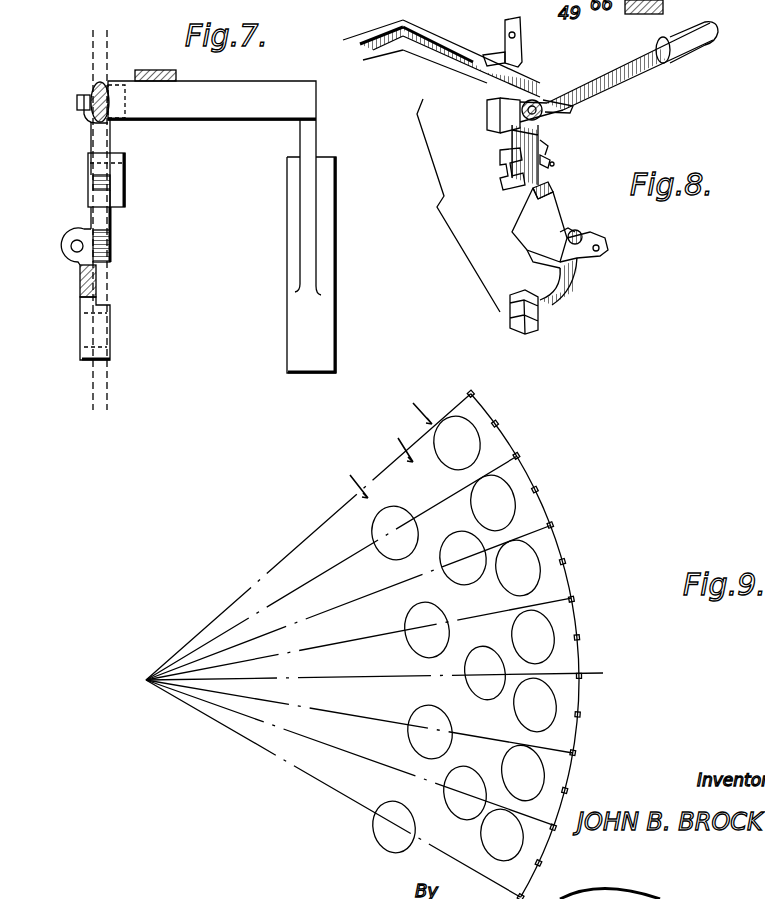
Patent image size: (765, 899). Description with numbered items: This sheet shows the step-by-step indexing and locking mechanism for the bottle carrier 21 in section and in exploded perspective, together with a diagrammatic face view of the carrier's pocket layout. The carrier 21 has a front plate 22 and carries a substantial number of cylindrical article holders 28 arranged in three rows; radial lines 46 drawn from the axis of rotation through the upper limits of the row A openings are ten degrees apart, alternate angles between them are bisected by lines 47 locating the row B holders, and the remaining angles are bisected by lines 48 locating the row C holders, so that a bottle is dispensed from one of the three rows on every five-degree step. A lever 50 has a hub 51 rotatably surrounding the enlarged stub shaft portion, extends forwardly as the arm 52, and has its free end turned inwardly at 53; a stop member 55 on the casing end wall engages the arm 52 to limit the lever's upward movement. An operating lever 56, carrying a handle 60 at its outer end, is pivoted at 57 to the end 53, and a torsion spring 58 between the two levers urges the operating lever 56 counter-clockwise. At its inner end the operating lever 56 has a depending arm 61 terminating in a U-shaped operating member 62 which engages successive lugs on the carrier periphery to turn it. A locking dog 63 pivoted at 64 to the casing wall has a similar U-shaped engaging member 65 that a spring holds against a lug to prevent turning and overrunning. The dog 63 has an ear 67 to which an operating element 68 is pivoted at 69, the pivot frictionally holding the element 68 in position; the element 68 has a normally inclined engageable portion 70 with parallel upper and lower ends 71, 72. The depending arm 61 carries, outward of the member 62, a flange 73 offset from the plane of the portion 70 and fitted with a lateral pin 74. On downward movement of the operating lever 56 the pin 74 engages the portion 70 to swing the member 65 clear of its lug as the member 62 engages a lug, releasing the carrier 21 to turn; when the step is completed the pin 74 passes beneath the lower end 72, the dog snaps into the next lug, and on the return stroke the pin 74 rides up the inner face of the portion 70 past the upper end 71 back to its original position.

In FIG. 7, the carrier 21 is at (119, 404).
In FIG. 9, the carrier 21 is at (580, 660).
In FIG. 7, the front plate 22 is at (92, 392).
In FIG. 9, the article holders 28 is at (466, 432).
In FIG. 9, the radial lines 46 is at (469, 393).
In FIG. 9, the bisecting lines 47 is at (466, 522).
In FIG. 9, the bisecting lines 48 is at (395, 497).
In FIG. 7, the lever 50 is at (307, 222).
In FIG. 8, the lever 50 is at (380, 40).
In FIG. 7, the hub 51 is at (339, 318).
In FIG. 7, the forwardly extending portion of lever 52 is at (262, 85).
In FIG. 8, the forwardly extending portion of lever 52 is at (448, 58).
In FIG. 7, the inwardly turned end of lever 53 is at (126, 92).
In FIG. 8, the inwardly turned end of lever 53 is at (487, 125).
In FIG. 7, the stop member 55 is at (157, 70).
In FIG. 8, the stop member 55 is at (486, 55).
In FIG. 7, the operating lever 56 is at (92, 84).
In FIG. 8, the operating lever 56 is at (628, 68).
In FIG. 7, the pivot 57 is at (77, 103).
In FIG. 8, the pivot 57 is at (555, 98).
In FIG. 7, the torsion spring 58 is at (84, 115).
In FIG. 8, the torsion spring 58 is at (570, 110).
In FIG. 8, the handle 60 is at (690, 45).
In FIG. 7, the depending arm 61 is at (101, 135).
In FIG. 8, the depending arm 61 is at (515, 142).
In FIG. 7, the U-shaped operating member 62 is at (88, 173).
In FIG. 8, the U-shaped operating member 62 is at (510, 190).
In FIG. 7, the locking dog 63 is at (79, 283).
In FIG. 8, the locking dog 63 is at (560, 290).
In FIG. 8, the pivot 64 is at (608, 246).
In FIG. 7, the U-shaped engaging member 65 is at (80, 340).
In FIG. 8, the U-shaped engaging member 65 is at (528, 328).
In FIG. 7, the ear 67 is at (67, 253).
In FIG. 8, the ear 67 is at (578, 230).
In FIG. 7, the operating element 68 is at (111, 240).
In FIG. 8, the operating element 68 is at (535, 243).
In FIG. 7, the pivot means 69 is at (70, 245).
In FIG. 8, the pivot means 69 is at (572, 232).
In FIG. 7, the engageable portion 70 is at (100, 213).
In FIG. 8, the engageable portion 70 is at (516, 212).
In FIG. 8, the upper end 71 is at (550, 190).
In FIG. 7, the lower end 72 is at (109, 262).
In FIG. 8, the lower end 72 is at (512, 236).
In FIG. 7, the flange 73 is at (125, 192).
In FIG. 8, the flange 73 is at (545, 150).
In FIG. 7, the pin 74 is at (92, 182).
In FIG. 8, the pin 74 is at (553, 162).